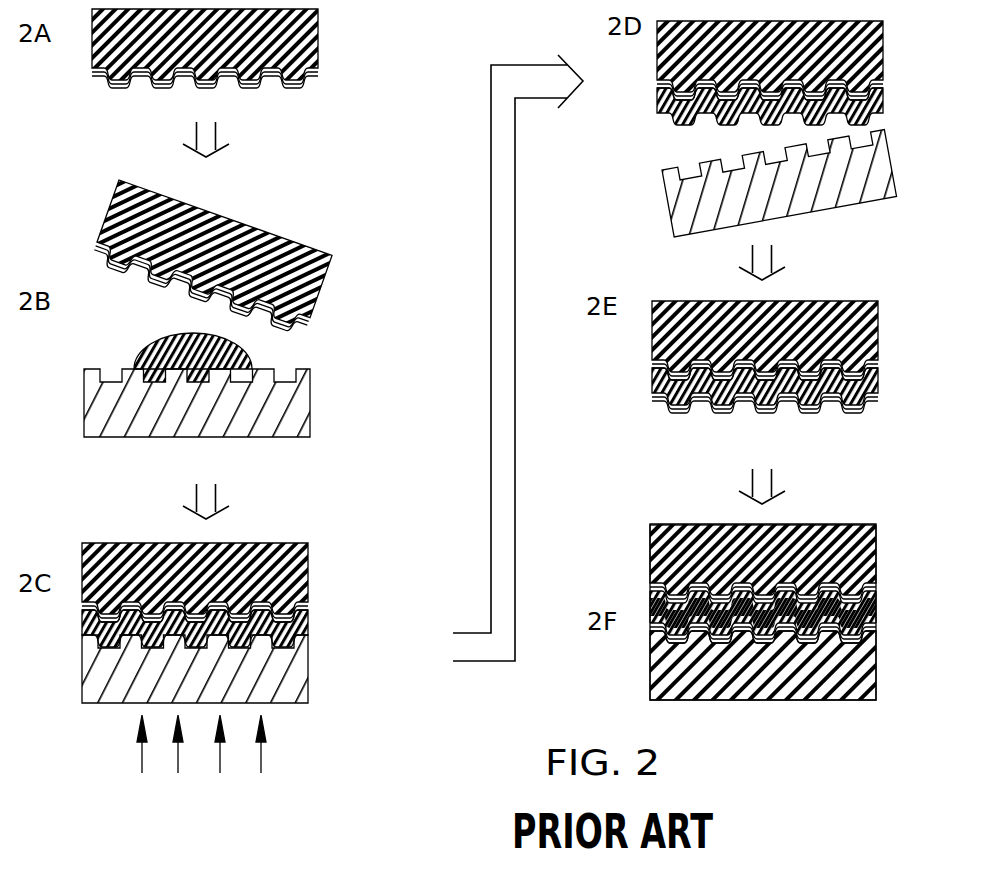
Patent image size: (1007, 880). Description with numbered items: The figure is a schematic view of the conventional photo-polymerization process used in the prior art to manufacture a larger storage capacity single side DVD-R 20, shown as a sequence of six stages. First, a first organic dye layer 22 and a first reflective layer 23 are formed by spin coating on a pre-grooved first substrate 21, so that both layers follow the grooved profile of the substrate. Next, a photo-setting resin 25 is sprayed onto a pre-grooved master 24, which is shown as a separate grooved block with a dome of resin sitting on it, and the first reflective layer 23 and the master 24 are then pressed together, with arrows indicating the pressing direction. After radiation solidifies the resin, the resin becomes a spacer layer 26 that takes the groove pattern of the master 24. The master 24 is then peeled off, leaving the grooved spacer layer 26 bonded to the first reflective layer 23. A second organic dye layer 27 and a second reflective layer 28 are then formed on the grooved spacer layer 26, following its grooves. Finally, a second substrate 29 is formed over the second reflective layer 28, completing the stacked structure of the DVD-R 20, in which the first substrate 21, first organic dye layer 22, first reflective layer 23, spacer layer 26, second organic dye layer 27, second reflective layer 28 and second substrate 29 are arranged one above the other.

The single side single layer DVD-R 20 is at (621, 537).
The first substrate 21 is at (318, 23).
The first organic dye layer 22 is at (318, 77).
The first reflective layer 23 is at (314, 81).
The master 24 is at (308, 416).
The photo-setting resin 25 is at (252, 356).
The spacer layer 26 is at (883, 111).
The second organic dye layer 27 is at (877, 393).
The second reflective layer 28 is at (877, 403).
The second substrate 29 is at (875, 662).